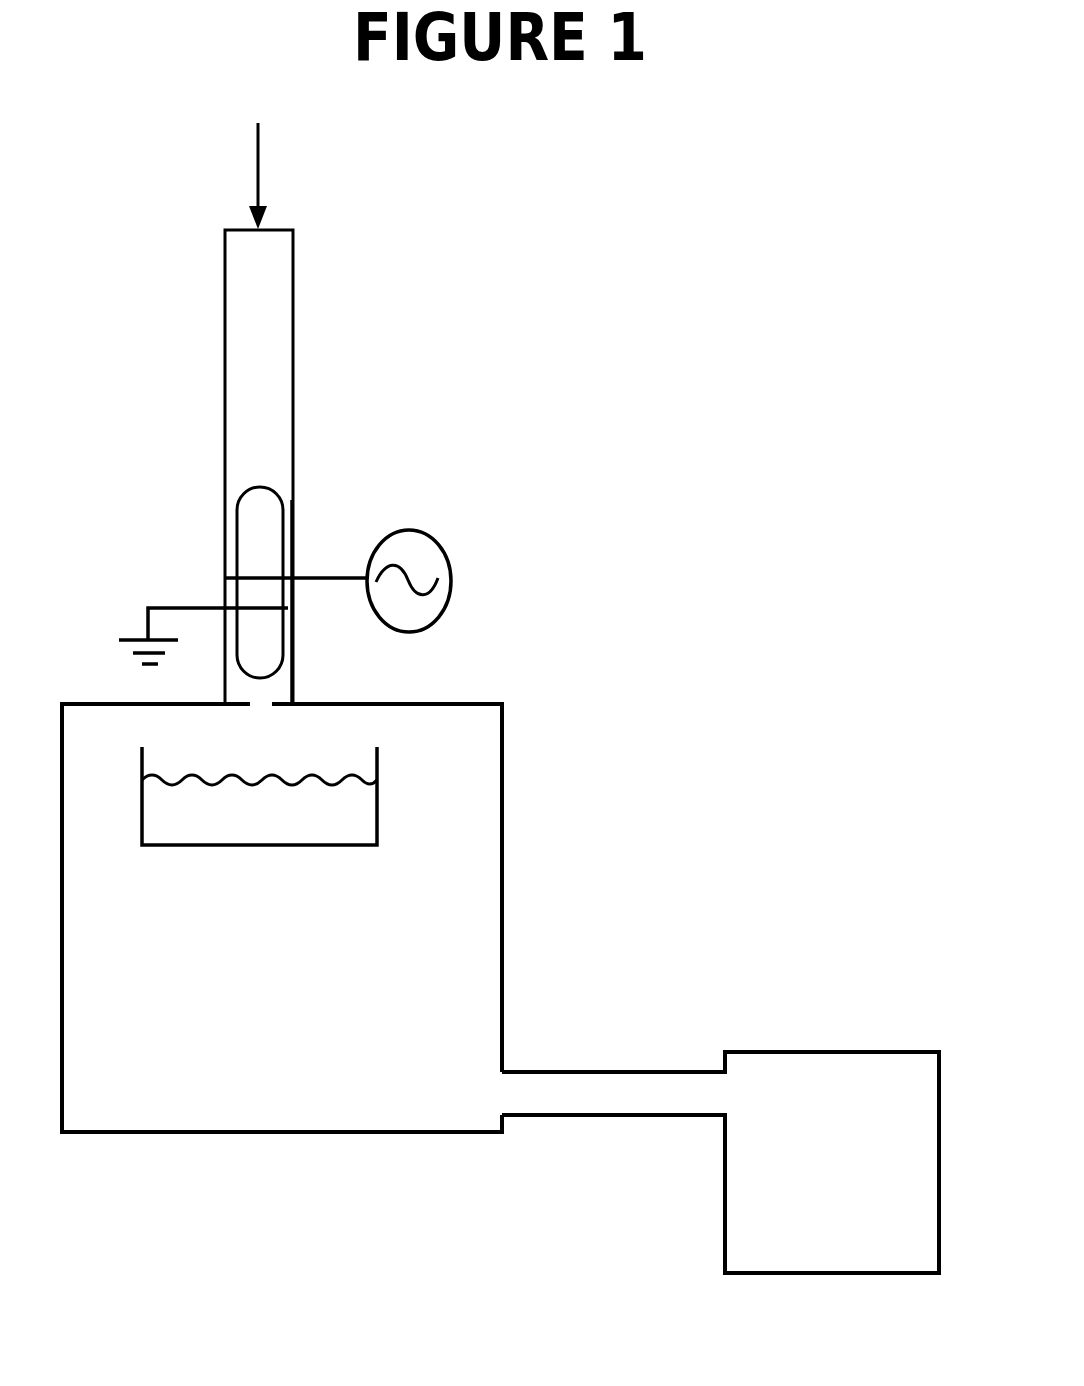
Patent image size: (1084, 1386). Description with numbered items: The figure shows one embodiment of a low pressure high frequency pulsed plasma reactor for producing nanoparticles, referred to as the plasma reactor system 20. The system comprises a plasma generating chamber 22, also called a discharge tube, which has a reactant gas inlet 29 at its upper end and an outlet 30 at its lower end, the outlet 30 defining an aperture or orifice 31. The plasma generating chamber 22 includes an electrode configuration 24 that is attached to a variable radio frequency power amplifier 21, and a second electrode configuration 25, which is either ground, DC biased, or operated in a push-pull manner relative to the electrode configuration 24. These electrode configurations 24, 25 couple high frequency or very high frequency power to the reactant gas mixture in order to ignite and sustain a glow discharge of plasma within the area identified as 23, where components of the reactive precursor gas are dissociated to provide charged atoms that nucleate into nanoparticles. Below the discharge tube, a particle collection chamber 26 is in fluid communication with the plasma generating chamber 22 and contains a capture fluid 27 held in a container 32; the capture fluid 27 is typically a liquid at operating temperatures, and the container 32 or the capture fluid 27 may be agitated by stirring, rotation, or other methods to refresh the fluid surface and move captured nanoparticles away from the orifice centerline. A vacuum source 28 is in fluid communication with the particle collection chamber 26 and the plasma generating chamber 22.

The plasma reactor system 20 is at (612, 808).
The variable radio frequency power amplifier 21 is at (452, 562).
The plasma generating chamber 22 is at (295, 387).
The plasma area 23 is at (250, 545).
The electrode configuration 24 is at (225, 568).
The second electrode configuration 25 is at (147, 624).
The particle collection chamber 26 is at (122, 1135).
The capture fluid 27 is at (315, 817).
The vacuum source 28 is at (882, 1050).
The reactant gas inlet 29 is at (259, 172).
The outlet 30 is at (295, 695).
The orifice 31 is at (258, 708).
The container 32 is at (202, 847).